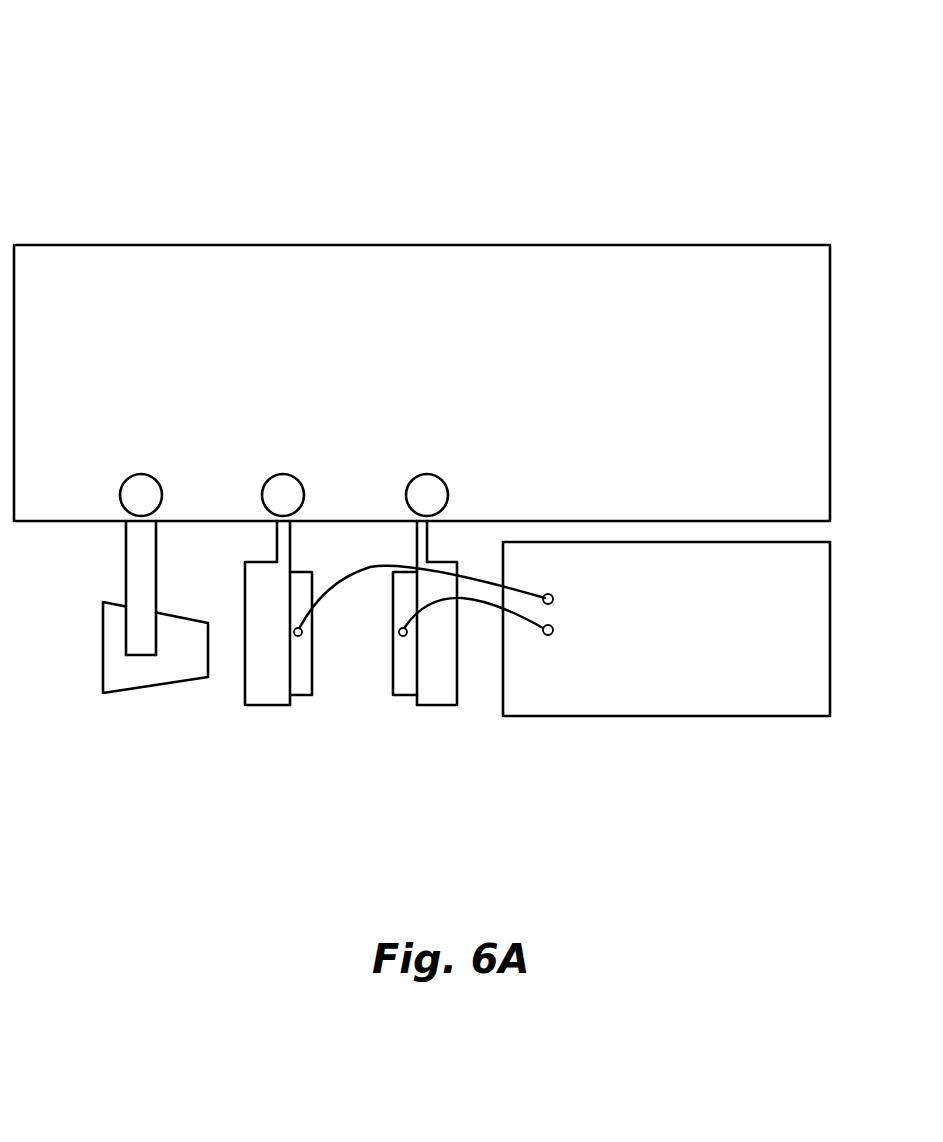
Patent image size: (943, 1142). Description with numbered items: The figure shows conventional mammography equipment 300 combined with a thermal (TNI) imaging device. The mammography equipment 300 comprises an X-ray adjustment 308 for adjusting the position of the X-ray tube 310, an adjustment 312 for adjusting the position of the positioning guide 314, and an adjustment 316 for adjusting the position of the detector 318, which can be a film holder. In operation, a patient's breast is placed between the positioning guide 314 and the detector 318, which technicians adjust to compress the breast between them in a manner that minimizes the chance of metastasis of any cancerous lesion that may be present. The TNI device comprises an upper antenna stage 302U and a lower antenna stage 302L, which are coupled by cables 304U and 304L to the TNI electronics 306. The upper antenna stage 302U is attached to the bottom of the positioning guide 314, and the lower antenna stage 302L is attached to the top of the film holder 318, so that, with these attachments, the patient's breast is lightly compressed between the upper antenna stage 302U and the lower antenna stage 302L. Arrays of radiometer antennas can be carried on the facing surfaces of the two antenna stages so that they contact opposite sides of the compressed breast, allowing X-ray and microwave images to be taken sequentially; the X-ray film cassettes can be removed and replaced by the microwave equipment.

The mammography equipment 300 is at (232, 196).
The upper antenna stage 302U is at (308, 692).
The lower antenna stage 302L is at (395, 697).
The cable 304U is at (320, 600).
The cable 304L is at (462, 600).
The TNI electronics 306 is at (608, 717).
The X-ray adjustment 308 is at (154, 478).
The X-ray tube 310 is at (103, 673).
The adjustment 312 is at (280, 477).
The positioning guide 314 is at (247, 693).
The adjustment 316 is at (430, 480).
The detector 318 is at (452, 708).